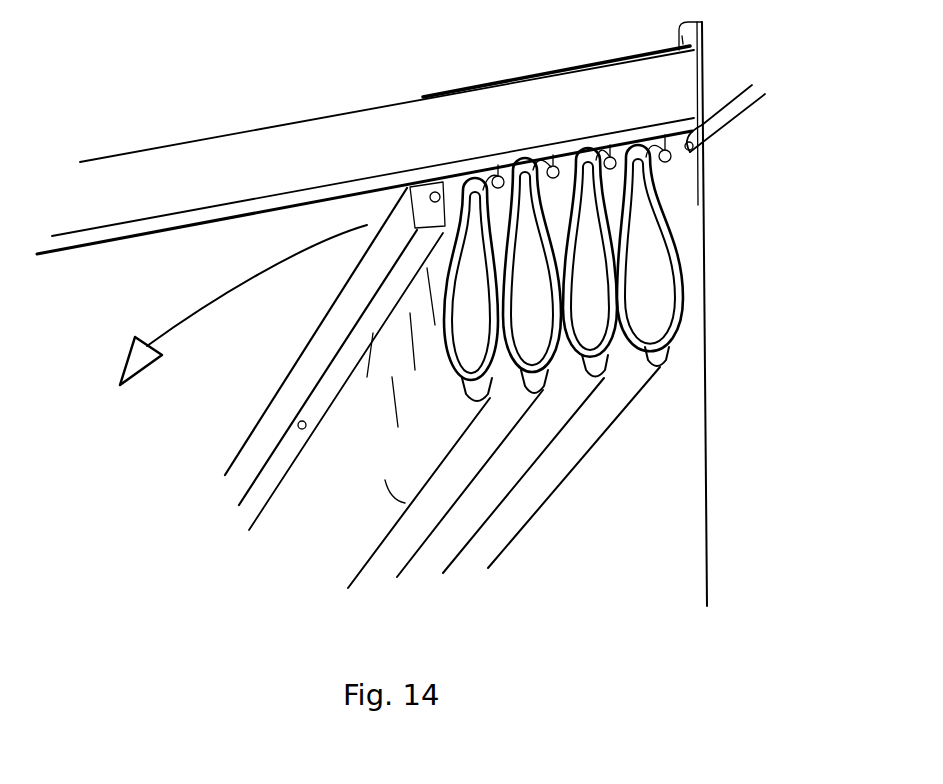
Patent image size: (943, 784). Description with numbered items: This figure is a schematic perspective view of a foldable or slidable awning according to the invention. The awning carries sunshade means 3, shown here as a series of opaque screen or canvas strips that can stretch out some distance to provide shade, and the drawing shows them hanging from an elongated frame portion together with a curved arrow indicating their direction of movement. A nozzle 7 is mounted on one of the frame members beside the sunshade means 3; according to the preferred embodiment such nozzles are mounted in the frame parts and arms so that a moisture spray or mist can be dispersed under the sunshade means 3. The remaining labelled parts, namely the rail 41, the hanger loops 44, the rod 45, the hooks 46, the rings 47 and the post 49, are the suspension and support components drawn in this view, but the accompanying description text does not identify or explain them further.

The sunshade means 3 is at (464, 553).
The nozzles 7 is at (298, 422).
The rail 41 is at (240, 163).
The hanger loop 44 is at (679, 292).
The rod 45 is at (731, 107).
The hook 46 is at (553, 172).
The ring 47 is at (493, 177).
The post 49 is at (709, 568).